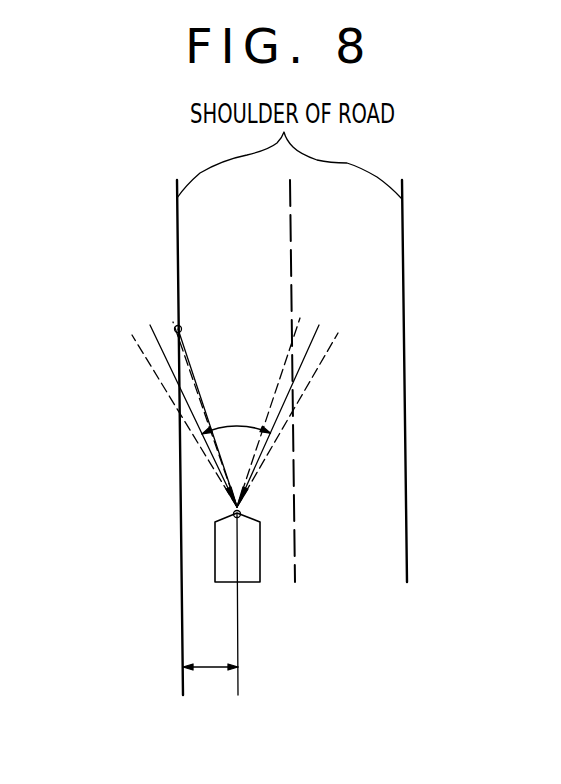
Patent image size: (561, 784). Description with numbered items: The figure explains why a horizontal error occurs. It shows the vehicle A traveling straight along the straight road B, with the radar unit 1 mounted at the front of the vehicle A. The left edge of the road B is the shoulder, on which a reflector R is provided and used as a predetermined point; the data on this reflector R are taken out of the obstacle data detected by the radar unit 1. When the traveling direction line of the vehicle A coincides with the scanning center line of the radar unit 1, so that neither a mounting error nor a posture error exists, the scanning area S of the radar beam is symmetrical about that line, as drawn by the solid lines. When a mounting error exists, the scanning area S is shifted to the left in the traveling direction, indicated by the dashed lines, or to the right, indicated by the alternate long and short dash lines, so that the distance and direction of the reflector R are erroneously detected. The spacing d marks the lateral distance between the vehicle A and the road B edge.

The radar unit 1 is at (237, 512).
The vehicle A is at (228, 563).
The straight road B is at (178, 237).
The reflector R is at (178, 330).
The scanning area S is at (236, 413).
The distance between vehicle and road shoulder d is at (210, 652).